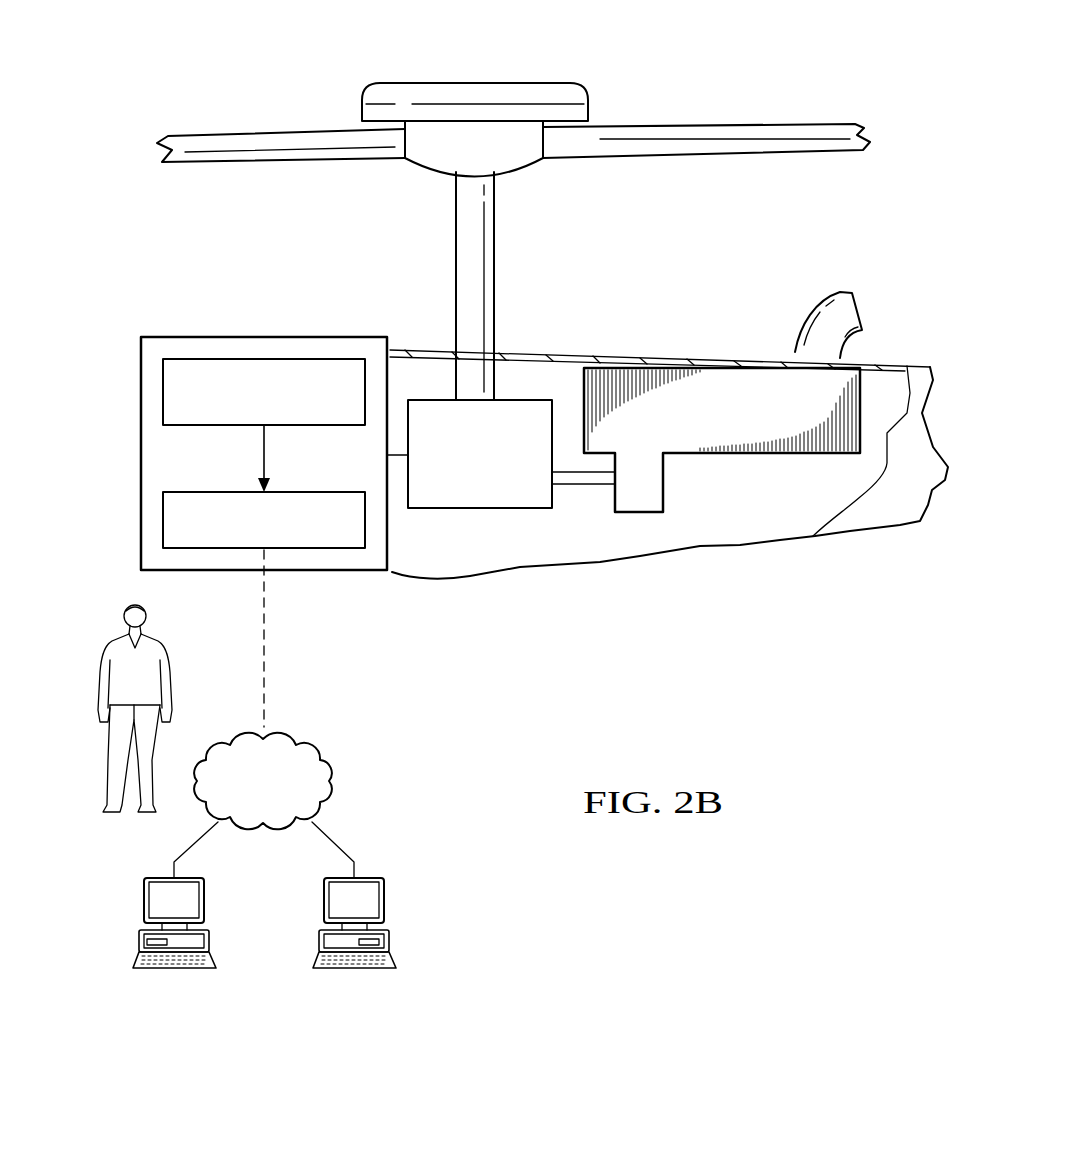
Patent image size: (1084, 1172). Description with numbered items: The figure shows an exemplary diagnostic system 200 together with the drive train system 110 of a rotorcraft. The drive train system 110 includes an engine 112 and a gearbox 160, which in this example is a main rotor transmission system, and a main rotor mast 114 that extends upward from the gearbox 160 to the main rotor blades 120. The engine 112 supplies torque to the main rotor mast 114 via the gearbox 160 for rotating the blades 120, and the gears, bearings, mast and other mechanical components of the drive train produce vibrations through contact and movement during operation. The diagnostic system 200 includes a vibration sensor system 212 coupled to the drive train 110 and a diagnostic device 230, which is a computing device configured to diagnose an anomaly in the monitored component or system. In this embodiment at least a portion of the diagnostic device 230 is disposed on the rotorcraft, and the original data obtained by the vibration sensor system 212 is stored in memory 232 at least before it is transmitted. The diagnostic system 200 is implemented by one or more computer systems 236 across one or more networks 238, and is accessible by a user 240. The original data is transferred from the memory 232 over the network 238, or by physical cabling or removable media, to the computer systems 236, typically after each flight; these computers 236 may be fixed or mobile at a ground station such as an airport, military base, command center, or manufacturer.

The drive train system 110 is at (434, 68).
The main rotor blades 120 is at (743, 125).
The main rotor mast 114 is at (456, 265).
The engine 112 is at (701, 425).
The gearbox 160 is at (459, 470).
The diagnostic system 200 is at (190, 331).
The vibration sensor system 212 is at (232, 426).
The memory 232 is at (297, 492).
The diagnostic device 230 is at (78, 519).
The network 238 is at (230, 730).
The computer systems 236 is at (163, 970).
The user 240 is at (103, 658).